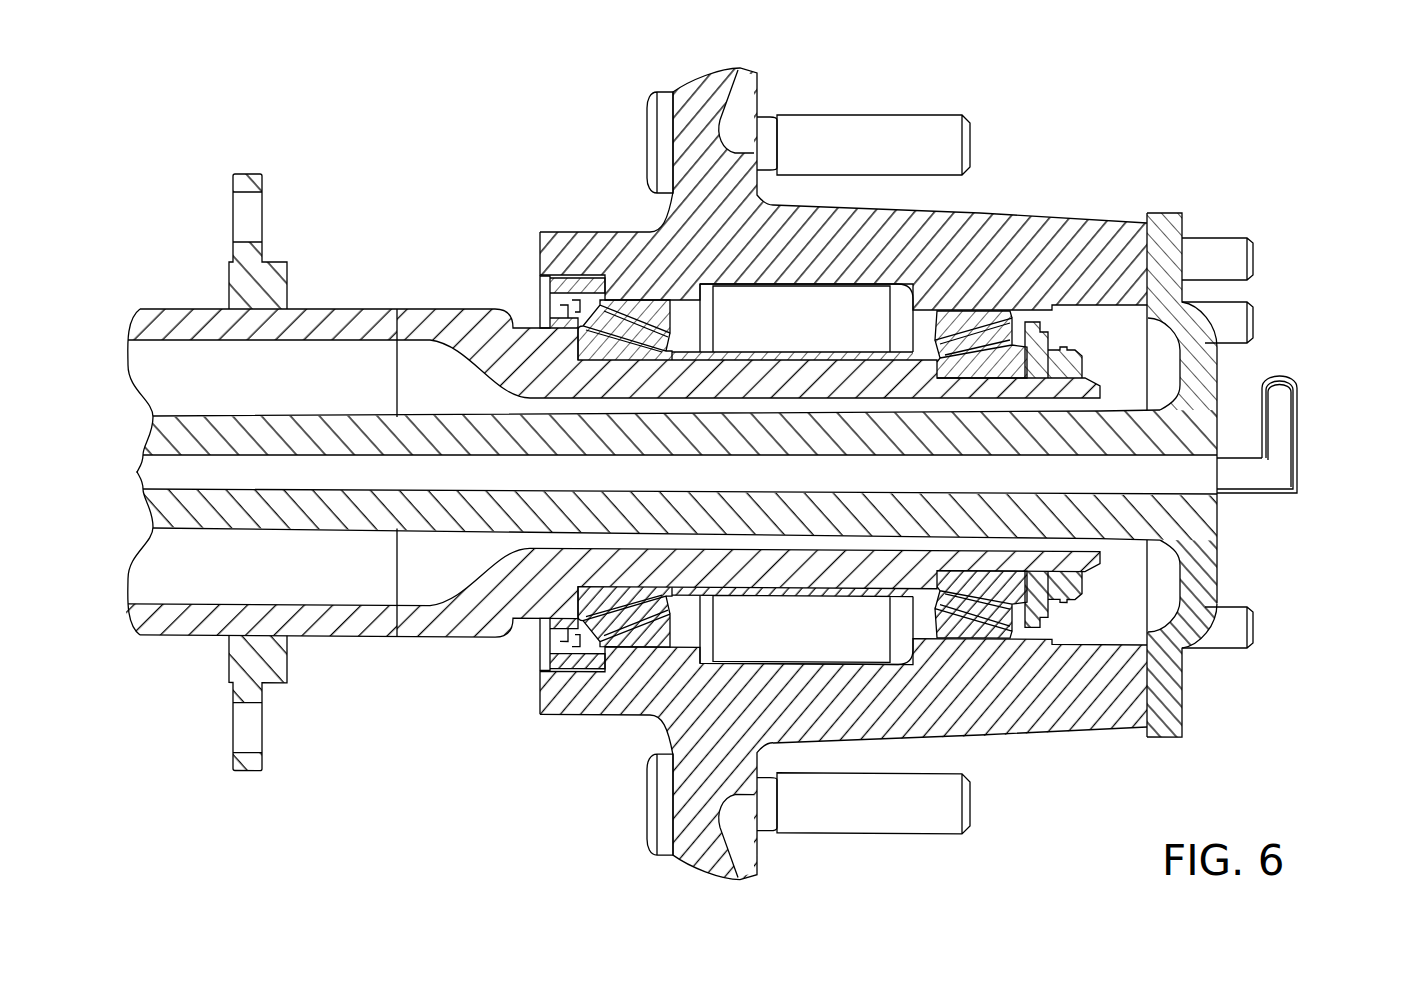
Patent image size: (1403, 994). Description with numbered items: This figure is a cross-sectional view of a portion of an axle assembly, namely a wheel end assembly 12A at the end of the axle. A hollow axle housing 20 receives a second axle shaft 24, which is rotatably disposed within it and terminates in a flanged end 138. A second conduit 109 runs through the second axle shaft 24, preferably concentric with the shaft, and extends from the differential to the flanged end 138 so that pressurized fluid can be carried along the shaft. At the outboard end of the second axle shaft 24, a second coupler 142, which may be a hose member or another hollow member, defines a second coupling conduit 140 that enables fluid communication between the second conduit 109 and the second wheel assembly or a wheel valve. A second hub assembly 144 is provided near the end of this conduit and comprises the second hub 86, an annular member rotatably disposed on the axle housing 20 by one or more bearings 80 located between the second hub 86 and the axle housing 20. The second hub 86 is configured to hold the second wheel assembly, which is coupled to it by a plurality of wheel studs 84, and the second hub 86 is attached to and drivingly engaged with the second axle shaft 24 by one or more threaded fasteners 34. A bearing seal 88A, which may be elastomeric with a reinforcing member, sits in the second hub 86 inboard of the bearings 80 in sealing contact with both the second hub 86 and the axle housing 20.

The wheel end assembly 12A is at (728, 474).
The axle housing 20 is at (817, 568).
The second axle shaft 24 is at (142, 513).
The threaded fasteners 34 is at (1257, 260).
The bearings 80 is at (628, 300).
The wheel studs 84 is at (867, 115).
The second hub 86 is at (1055, 274).
The bearing seal 88A is at (568, 293).
The second conduit 109 is at (157, 473).
The flanged end 138 is at (1212, 550).
The second coupling conduit 140 is at (1281, 417).
The second coupler 142 is at (1297, 449).
The second hub assembly 144 is at (1067, 220).